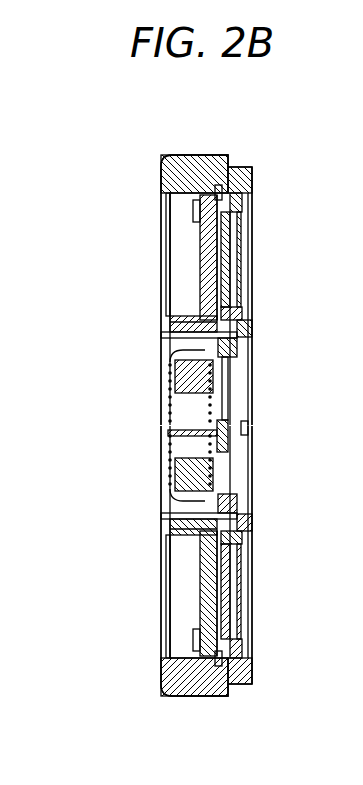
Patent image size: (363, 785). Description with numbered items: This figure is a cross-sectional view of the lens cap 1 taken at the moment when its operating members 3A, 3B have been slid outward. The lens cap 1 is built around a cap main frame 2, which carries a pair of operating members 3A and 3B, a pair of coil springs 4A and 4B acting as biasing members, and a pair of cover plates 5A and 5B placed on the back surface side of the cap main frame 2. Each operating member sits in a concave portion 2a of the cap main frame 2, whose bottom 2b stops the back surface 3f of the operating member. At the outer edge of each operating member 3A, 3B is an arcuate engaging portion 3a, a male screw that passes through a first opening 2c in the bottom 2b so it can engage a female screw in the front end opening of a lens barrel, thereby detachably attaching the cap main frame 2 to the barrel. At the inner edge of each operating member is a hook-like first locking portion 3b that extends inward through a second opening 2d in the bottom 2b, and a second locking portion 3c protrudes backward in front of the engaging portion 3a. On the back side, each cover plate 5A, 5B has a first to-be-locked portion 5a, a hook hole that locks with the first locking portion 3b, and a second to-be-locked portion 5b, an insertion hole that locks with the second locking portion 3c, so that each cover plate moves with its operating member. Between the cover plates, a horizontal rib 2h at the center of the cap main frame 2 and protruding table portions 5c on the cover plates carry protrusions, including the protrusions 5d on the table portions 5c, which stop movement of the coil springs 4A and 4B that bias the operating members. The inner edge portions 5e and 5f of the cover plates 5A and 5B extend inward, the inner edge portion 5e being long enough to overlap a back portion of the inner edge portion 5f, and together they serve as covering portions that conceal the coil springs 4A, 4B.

The lens cap 1 is at (206, 152).
The cap main frame 2 is at (162, 160).
The concave portion 2a is at (163, 208).
The bottom 2b is at (245, 255).
The first opening 2c is at (165, 243).
The second opening 2d is at (163, 336).
The horizontal rib 2h is at (244, 428).
The operating member 3A is at (163, 270).
The operating member 3B is at (165, 576).
The engaging portion 3a is at (240, 168).
The first locking portion 3b is at (246, 335).
The second locking portion 3c is at (244, 212).
The back surface 3f is at (163, 306).
The coil spring 4A is at (165, 398).
The coil spring 4B is at (165, 470).
The cover plate 5A is at (243, 288).
The cover plate 5B is at (240, 556).
The first to-be-locked portion 5a is at (243, 318).
The second to-be-locked portion 5b is at (224, 198).
The protruding table portion 5c is at (166, 360).
The protrusion 5d is at (167, 437).
The inner edge portion 5e is at (230, 400).
The inner edge portion 5f is at (230, 458).